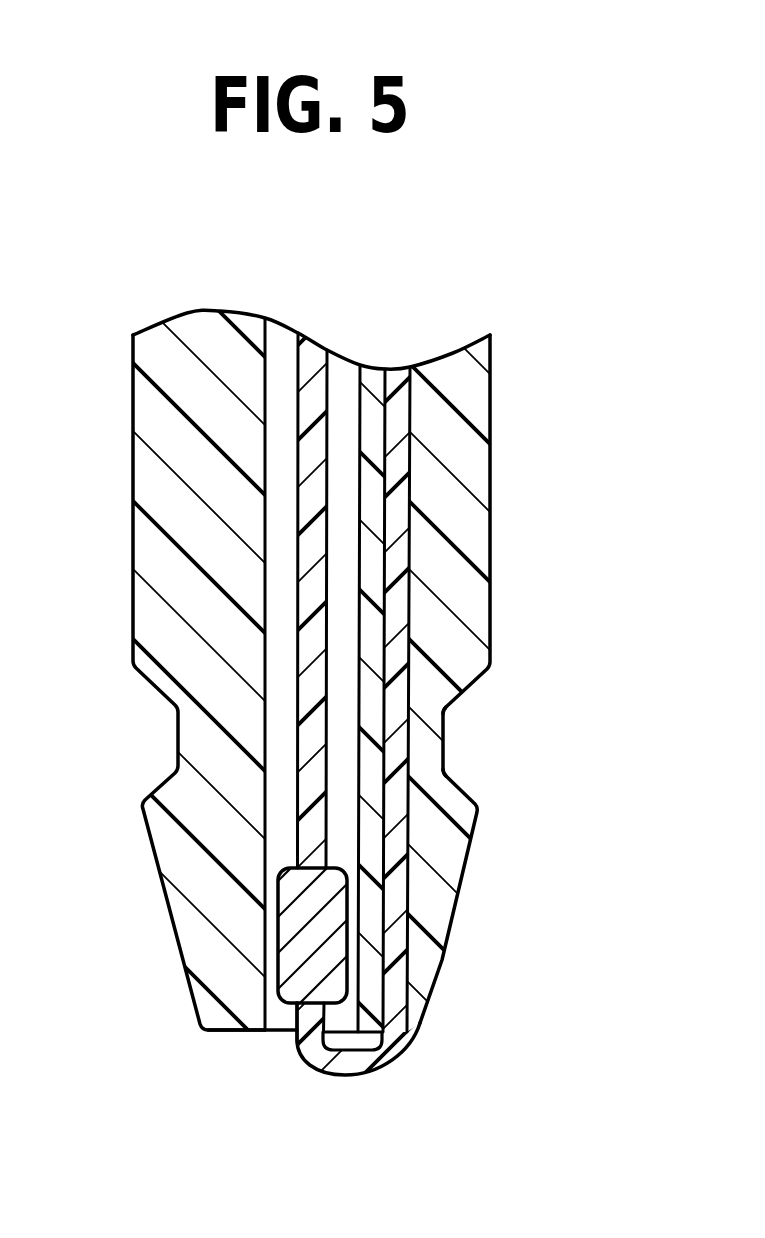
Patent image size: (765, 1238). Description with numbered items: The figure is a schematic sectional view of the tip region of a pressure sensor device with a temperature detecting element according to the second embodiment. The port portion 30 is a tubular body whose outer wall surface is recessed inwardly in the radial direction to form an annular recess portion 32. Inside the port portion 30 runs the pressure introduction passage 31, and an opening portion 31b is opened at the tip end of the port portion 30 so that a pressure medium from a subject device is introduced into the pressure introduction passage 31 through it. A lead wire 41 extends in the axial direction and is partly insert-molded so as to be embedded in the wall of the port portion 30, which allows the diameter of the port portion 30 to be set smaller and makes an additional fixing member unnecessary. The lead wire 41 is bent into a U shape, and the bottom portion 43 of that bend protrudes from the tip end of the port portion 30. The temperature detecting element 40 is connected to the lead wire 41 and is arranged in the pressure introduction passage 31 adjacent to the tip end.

The port portion 30 is at (489, 587).
The pressure introduction passage 31 is at (342, 492).
The opening portion 31b is at (267, 1033).
The recess portion 32 is at (442, 758).
The temperature detecting element 40 is at (327, 893).
The lead wire 41 is at (308, 555).
The bottom portion 43 is at (353, 1065).